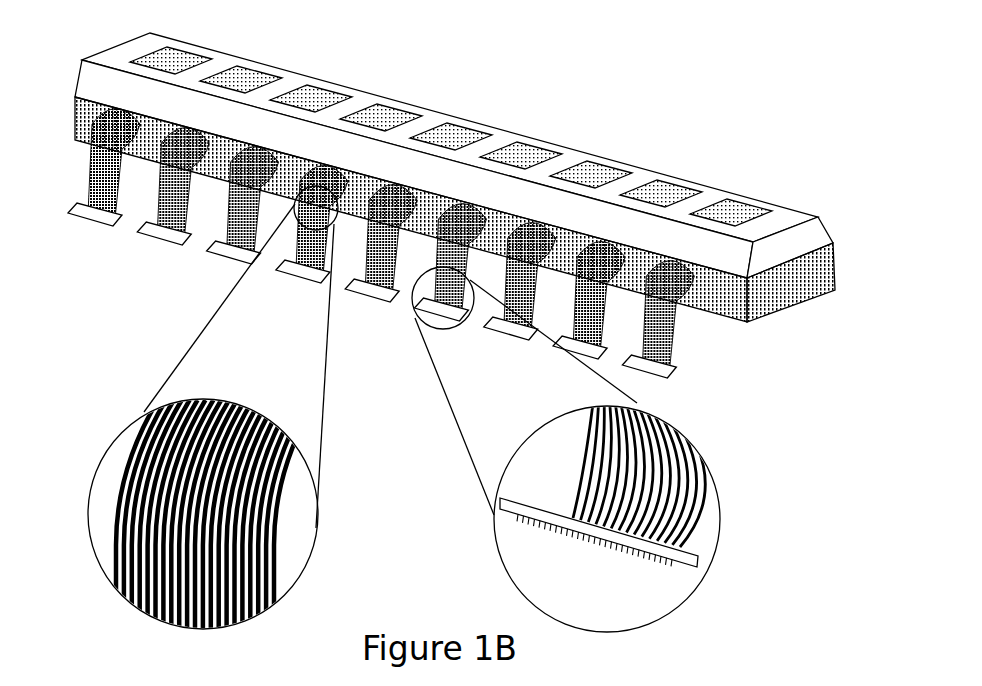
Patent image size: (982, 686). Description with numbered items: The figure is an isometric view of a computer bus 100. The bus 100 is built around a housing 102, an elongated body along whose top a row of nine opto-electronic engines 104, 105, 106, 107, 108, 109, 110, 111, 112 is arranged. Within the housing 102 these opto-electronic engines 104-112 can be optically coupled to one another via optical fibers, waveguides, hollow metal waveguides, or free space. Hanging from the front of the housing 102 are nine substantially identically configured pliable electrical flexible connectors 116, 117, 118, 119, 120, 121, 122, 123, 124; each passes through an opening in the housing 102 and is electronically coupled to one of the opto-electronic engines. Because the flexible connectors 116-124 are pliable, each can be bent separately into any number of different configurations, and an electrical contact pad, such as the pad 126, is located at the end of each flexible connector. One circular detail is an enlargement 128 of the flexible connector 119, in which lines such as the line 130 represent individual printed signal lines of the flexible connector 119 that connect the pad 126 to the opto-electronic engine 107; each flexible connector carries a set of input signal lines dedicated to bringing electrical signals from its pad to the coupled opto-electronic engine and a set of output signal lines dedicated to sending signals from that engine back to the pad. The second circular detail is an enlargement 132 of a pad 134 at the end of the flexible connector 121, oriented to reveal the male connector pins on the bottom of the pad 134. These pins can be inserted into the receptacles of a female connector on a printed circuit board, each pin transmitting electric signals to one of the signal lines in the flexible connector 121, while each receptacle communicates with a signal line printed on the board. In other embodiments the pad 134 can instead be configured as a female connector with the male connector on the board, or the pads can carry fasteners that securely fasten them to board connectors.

The bus 100 is at (729, 95).
The housing 102 is at (780, 212).
The opto-electronic engine 104 is at (185, 54).
The opto-electronic engine 105 is at (255, 73).
The opto-electronic engine 106 is at (325, 92).
The opto-electronic engine 107 is at (395, 111).
The opto-electronic engine 108 is at (465, 130).
The opto-electronic engine 109 is at (535, 149).
The opto-electronic engine 110 is at (605, 168).
The opto-electronic engine 111 is at (675, 187).
The opto-electronic engine 112 is at (745, 206).
The flexible connector 116 is at (119, 197).
The flexible connector 117 is at (188, 216).
The flexible connector 118 is at (258, 235).
The flexible connector 119 is at (331, 256).
The flexible connector 120 is at (397, 277).
The flexible connector 121 is at (468, 284).
The flexible connector 122 is at (536, 311).
The flexible connector 123 is at (604, 310).
The flexible connector 124 is at (674, 333).
The pad 126 is at (298, 272).
The enlargement 128 is at (316, 535).
The line 130 is at (278, 577).
The enlargement 132 is at (720, 523).
The pad 134 is at (441, 318).